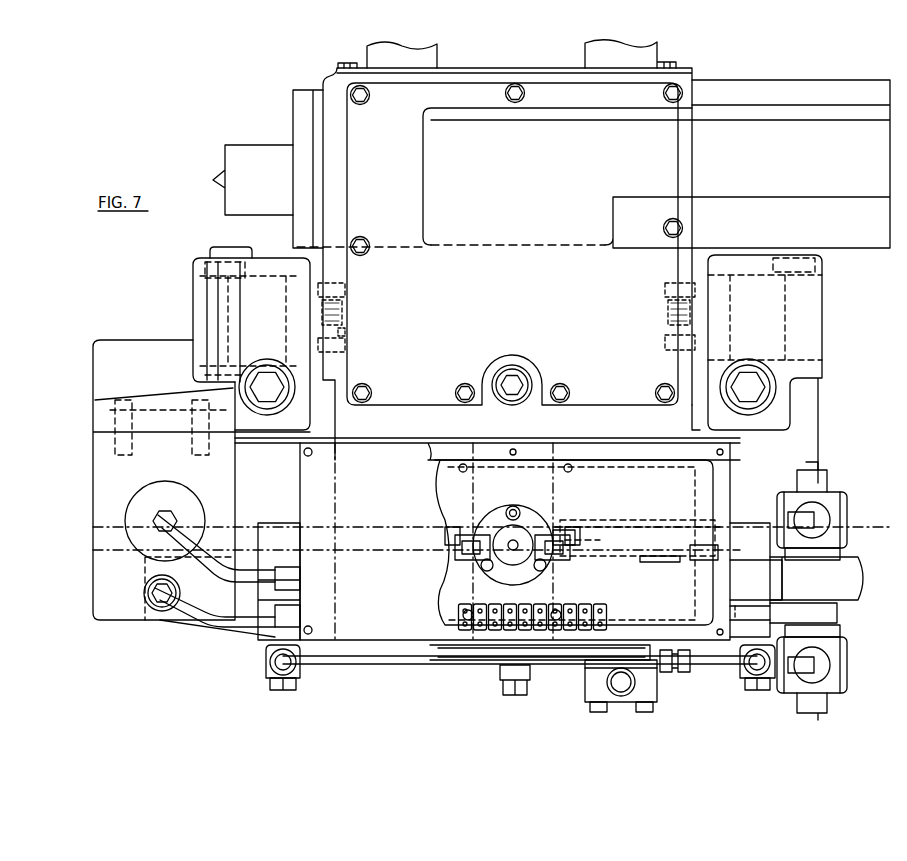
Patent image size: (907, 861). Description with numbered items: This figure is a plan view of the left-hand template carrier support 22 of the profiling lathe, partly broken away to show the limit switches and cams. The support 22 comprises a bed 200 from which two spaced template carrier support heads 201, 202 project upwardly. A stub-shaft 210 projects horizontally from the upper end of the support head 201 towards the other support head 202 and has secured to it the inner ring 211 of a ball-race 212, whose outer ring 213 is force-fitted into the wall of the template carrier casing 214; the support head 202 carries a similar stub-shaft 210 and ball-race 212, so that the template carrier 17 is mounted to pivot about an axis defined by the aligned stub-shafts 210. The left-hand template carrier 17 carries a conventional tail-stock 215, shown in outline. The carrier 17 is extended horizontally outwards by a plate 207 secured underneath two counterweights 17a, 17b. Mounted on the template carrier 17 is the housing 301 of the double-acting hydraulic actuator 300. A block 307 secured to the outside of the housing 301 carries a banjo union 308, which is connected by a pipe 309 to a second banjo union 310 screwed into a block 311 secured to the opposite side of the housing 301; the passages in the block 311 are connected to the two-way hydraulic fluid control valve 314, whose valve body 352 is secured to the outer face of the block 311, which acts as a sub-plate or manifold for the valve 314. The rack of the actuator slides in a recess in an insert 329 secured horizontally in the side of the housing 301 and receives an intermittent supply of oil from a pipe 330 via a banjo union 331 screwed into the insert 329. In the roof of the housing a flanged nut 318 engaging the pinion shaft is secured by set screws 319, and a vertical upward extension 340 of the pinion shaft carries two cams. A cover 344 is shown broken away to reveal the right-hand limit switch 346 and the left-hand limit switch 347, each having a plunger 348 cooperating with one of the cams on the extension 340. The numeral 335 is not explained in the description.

The template carrier 17 is at (285, 124).
The counterweight 17a is at (335, 491).
The counterweight 17b is at (693, 491).
The template carrier support 22 is at (186, 309).
The bed 200 is at (130, 345).
The template carrier support head 201 is at (252, 258).
The template carrier support head 202 is at (758, 270).
The plate 207 is at (175, 620).
The stub-shaft 210 is at (342, 310).
The inner ring 211 is at (347, 334).
The ball-race 212 is at (345, 292).
The outer ring 213 is at (347, 349).
The template carrier casing 214 is at (330, 230).
The tail-stock 215 is at (232, 164).
The double-acting hydraulic actuator 300 is at (742, 462).
The housing 301 is at (724, 475).
The block 307 is at (273, 527).
The banjo union 308 is at (265, 667).
The pipe 309 is at (395, 664).
The banjo union 310 is at (745, 670).
The block 311 is at (740, 527).
The two-way hydraulic fluid control valve 314 is at (852, 562).
The flanged nut 318 is at (495, 513).
The set screw 319 is at (517, 507).
The insert 329 is at (482, 660).
The pipe 330 is at (555, 668).
The banjo union 331 is at (505, 681).
The plate 335 is at (588, 443).
The vertical upward extension 340 is at (555, 530).
The cover 344 is at (402, 499).
The right-hand limit switch 346 is at (624, 558).
The left-hand limit switch 347 is at (452, 557).
The plunger 348 is at (460, 565).
The rod 352 is at (838, 617).